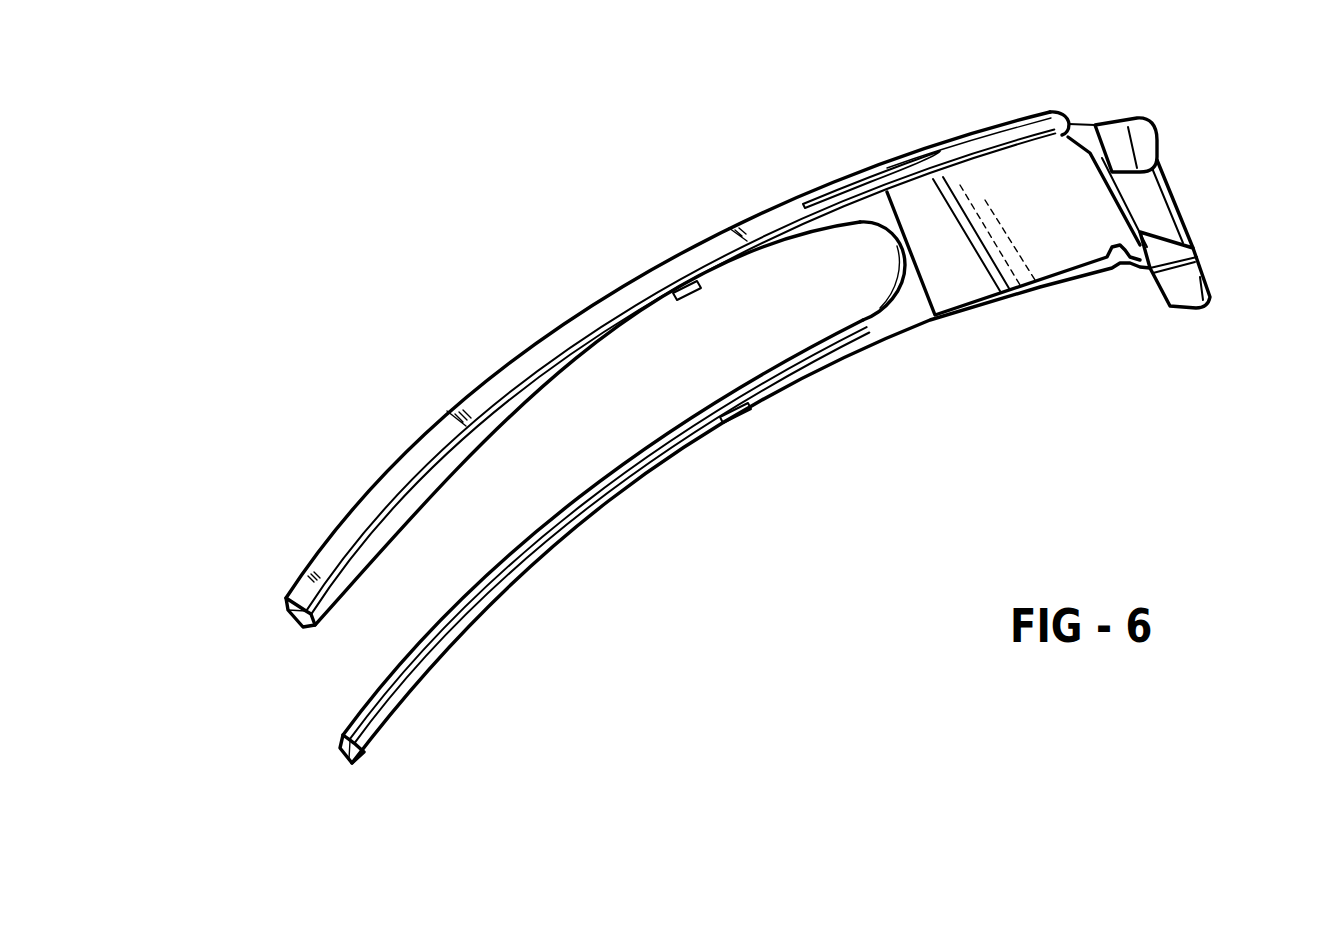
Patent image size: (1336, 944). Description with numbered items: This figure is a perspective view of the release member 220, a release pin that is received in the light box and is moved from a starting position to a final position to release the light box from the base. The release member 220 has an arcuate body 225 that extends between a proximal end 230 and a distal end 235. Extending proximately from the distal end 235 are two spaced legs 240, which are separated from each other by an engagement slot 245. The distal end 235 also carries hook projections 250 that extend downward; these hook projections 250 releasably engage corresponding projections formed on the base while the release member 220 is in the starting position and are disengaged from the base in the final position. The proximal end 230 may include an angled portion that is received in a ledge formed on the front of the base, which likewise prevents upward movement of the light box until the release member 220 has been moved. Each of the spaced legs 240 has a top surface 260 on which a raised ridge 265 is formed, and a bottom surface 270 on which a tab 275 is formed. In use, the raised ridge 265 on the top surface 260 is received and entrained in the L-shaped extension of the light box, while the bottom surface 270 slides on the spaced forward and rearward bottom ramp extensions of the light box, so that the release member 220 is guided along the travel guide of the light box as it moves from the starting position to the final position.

The release member 220 is at (751, 213).
The arcuate body 225 is at (510, 358).
The proximal end 230 is at (272, 610).
The distal end 235 is at (1058, 172).
The spaced legs 240 is at (597, 308).
The engagement slot 245 is at (888, 255).
The hook projections 250 is at (1143, 147).
The top surface 260 is at (340, 748).
The raised ridge 265 is at (358, 710).
The bottom surface 270 is at (683, 447).
The tab 275 is at (741, 409).